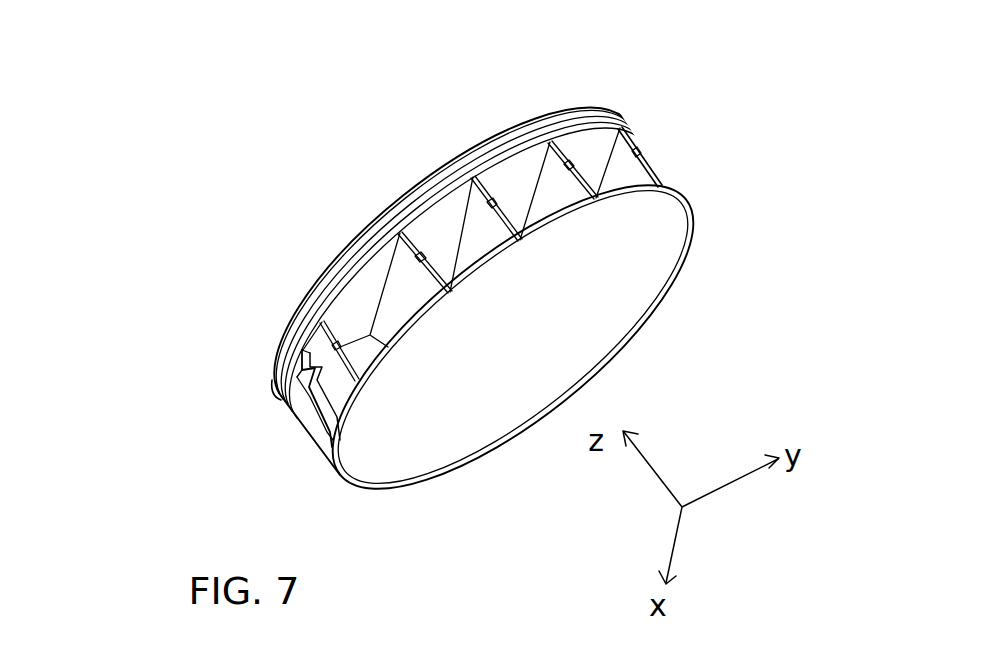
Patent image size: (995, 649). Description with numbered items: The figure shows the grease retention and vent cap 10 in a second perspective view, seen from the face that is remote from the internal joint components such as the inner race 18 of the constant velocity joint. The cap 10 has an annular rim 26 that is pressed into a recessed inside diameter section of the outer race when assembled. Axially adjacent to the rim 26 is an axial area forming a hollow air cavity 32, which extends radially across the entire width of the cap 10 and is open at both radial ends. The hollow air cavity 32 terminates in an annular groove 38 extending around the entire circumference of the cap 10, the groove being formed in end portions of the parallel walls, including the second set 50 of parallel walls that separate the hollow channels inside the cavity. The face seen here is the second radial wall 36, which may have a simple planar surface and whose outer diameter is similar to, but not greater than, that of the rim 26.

The cap 10 is at (290, 181).
The inner race 18 is at (370, 300).
The annular rim 26 is at (613, 118).
The hollow air cavity 32 is at (512, 179).
The second radial wall 36 is at (582, 298).
The annular groove 38 is at (570, 167).
The second set of parallel walls 50 is at (430, 287).